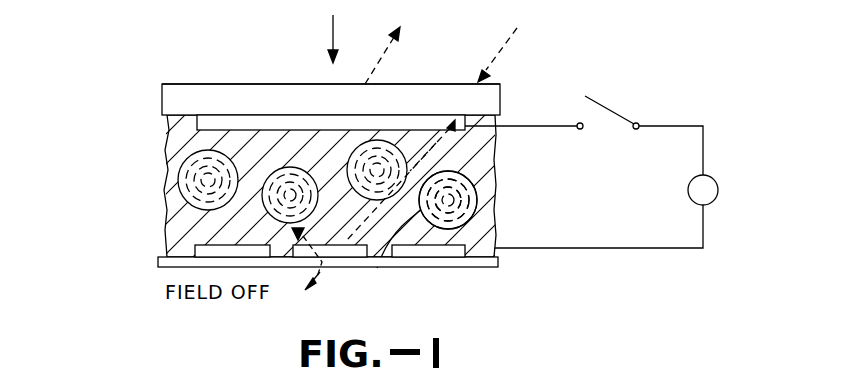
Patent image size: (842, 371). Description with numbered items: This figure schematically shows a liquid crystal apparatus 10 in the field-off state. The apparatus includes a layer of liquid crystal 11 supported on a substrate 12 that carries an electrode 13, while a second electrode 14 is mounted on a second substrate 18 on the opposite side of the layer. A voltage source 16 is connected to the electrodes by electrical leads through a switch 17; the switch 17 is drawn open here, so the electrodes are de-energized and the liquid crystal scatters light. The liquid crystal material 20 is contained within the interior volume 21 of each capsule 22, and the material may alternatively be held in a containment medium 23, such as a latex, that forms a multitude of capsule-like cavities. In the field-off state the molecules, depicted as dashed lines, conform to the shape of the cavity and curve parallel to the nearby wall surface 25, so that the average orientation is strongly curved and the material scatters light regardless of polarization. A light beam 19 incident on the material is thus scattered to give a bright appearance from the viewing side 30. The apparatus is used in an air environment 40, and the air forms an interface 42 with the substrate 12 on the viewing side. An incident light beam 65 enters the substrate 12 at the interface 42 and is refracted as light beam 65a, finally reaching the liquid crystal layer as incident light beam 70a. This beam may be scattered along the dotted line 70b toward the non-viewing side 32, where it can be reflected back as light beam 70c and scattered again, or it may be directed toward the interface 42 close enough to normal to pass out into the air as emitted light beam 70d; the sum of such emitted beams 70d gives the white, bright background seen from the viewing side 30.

The liquid crystal apparatus 10 is at (136, 103).
The liquid crystal 11 is at (166, 222).
The substrate 12 is at (227, 93).
The electrode 13 is at (392, 86).
The second electrode 14 is at (420, 262).
The voltage source 16 is at (712, 192).
The switch 17 is at (608, 106).
The substrate 18 is at (160, 265).
The light beam 19 is at (335, 18).
The liquid crystal material 20 is at (478, 208).
The interior volume 21 is at (480, 187).
The capsule 22 is at (494, 165).
The containment medium 23 is at (173, 153).
The wall surface 25 is at (413, 212).
The viewing side 30 is at (331, 44).
The non-viewing side 32 is at (445, 279).
The air environment 40 is at (484, 58).
The interface 42 is at (177, 83).
The incident light beam 65 is at (506, 32).
The light beam 65a is at (455, 116).
The incident light beam 70a is at (423, 158).
The light beam 70b is at (317, 277).
The light beam 70c is at (307, 264).
The light beam 70d is at (402, 48).